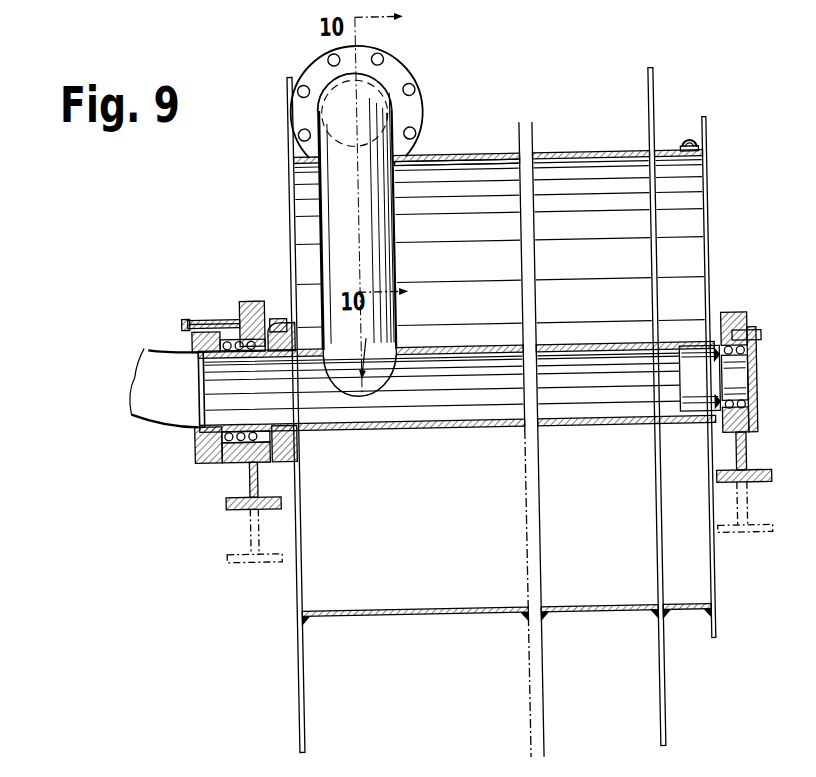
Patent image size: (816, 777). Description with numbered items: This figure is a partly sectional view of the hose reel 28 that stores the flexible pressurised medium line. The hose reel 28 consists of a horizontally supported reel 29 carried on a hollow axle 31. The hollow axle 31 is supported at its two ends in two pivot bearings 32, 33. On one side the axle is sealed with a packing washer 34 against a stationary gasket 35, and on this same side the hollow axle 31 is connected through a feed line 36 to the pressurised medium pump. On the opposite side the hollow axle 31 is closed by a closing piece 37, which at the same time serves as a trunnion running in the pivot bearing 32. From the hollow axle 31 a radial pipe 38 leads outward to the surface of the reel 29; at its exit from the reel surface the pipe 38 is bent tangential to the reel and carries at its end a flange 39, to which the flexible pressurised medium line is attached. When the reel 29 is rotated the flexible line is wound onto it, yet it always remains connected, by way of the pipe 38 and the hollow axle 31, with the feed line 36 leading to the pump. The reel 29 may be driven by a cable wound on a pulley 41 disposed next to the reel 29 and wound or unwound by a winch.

The hose reel 28 is at (562, 110).
The reel 29 is at (474, 150).
The hollow axle 31 is at (440, 430).
The pivot bearing 32 is at (738, 310).
The pivot bearing 33 is at (246, 290).
The packing washer 34 is at (224, 370).
The stationary gasket 35 is at (190, 438).
The feed line 36 is at (164, 341).
The closing piece 37 is at (693, 390).
The radial pipe 38 is at (402, 210).
The flange 39 is at (408, 66).
The pulley 41 is at (676, 151).